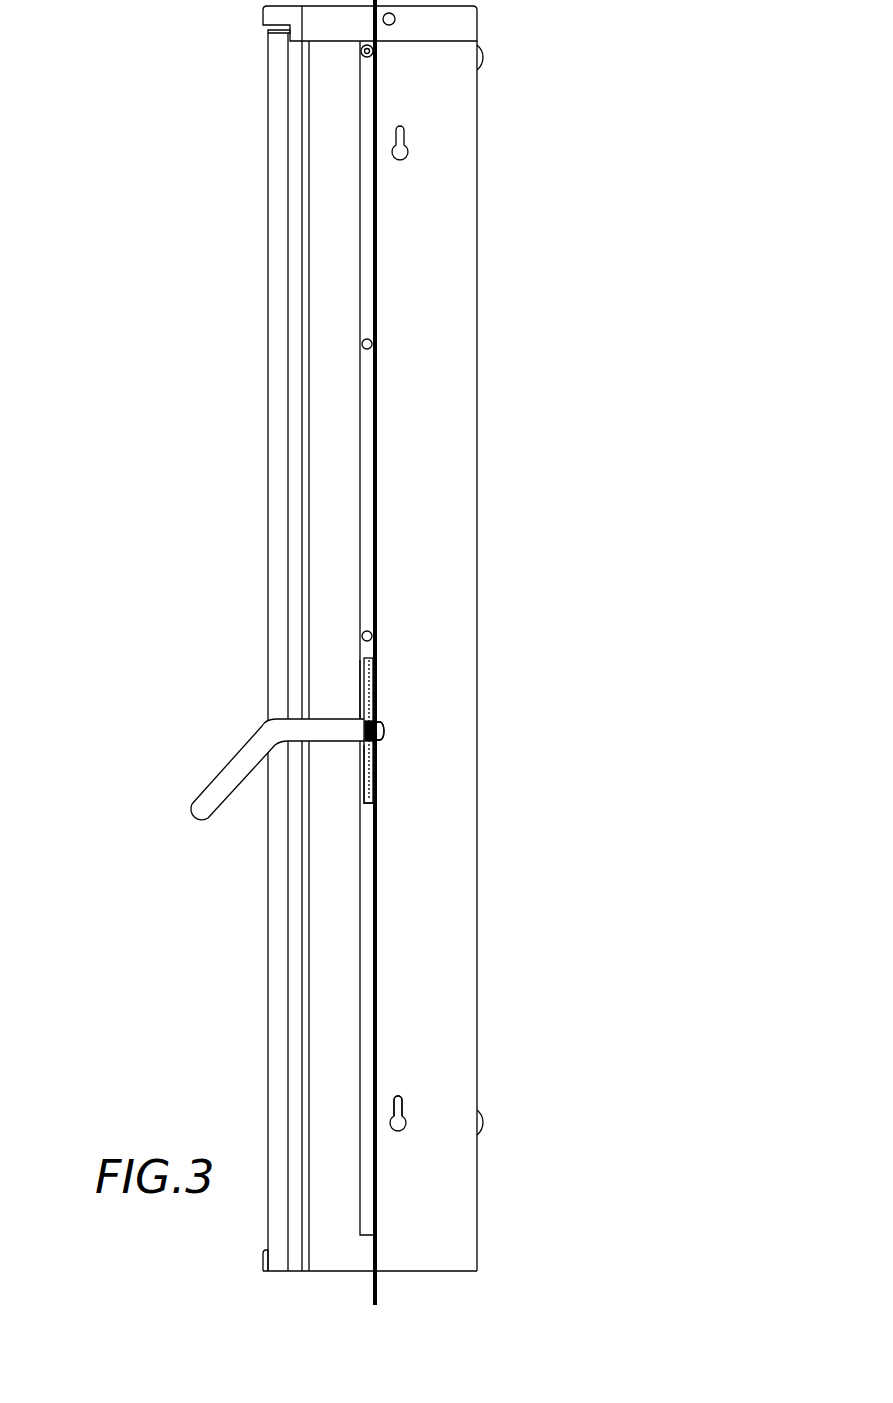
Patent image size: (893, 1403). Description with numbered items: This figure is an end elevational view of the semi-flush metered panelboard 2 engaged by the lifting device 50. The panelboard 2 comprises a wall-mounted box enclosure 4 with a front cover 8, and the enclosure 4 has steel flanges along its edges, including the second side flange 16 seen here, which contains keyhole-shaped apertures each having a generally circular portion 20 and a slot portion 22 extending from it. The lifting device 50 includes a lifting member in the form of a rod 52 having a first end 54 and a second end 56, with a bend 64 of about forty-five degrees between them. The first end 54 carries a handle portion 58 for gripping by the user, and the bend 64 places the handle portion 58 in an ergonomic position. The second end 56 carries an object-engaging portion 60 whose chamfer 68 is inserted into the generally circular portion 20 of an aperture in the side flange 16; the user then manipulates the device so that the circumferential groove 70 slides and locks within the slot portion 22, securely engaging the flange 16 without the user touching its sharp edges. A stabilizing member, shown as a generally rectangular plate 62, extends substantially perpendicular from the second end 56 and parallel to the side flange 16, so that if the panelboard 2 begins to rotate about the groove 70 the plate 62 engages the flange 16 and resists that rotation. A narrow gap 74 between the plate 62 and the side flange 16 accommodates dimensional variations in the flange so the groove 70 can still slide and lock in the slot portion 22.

The semi-flush metered panelboard 2 is at (442, 1282).
The box enclosure 4 is at (466, 95).
The front cover 8 is at (268, 90).
The second side flange 16 is at (376, 403).
The generally circular portion 20 is at (403, 1125).
The slot portion 22 is at (404, 1106).
The lifting device 50 is at (210, 794).
The lifting member 52 is at (232, 733).
The first end 54 is at (204, 840).
The second end 56 is at (350, 699).
The handle portion 58 is at (196, 815).
The object-engaging portion 60 is at (396, 756).
The stabilizing member 62 is at (365, 770).
The bend 64 is at (276, 736).
The chamfer 68 is at (384, 729).
The circumferential groove 70 is at (376, 722).
The narrow gap 74 is at (372, 792).